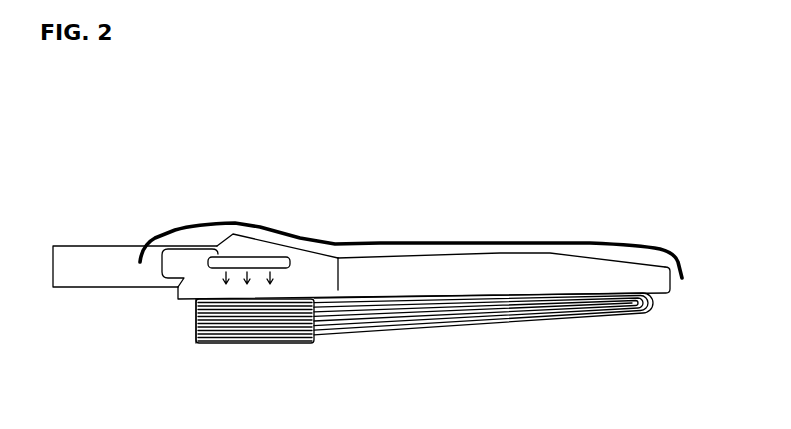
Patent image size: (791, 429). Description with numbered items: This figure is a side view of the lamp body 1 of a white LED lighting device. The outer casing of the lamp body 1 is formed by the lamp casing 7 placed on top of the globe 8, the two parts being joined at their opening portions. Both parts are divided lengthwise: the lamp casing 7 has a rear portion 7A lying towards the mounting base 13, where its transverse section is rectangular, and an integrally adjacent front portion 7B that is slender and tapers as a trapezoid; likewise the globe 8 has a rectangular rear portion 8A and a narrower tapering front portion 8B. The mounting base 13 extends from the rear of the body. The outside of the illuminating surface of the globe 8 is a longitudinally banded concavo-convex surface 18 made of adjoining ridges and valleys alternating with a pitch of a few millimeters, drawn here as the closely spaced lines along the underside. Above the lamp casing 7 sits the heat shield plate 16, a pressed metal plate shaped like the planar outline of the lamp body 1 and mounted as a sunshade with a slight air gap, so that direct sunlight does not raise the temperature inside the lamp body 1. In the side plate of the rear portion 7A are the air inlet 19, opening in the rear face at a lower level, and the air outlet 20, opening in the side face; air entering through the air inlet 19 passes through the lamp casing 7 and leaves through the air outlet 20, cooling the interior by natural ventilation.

The lamp body 1 is at (458, 227).
The lamp casing 7 is at (383, 240).
The rear portion of lamp casing 7A is at (292, 247).
The front portion of lamp casing 7B is at (500, 252).
The globe 8 is at (408, 333).
The rear portion of globe 8A is at (273, 345).
The front portion of globe 8B is at (473, 323).
The mounting base 13 is at (77, 245).
The heat shield plate 16 is at (198, 228).
The concavo-convex surface 18 is at (230, 333).
The air inlet 19 is at (212, 268).
The air outlet 20 is at (196, 306).